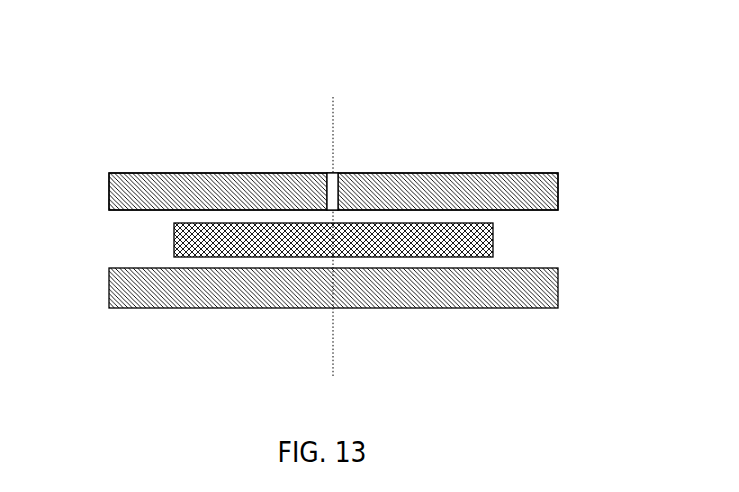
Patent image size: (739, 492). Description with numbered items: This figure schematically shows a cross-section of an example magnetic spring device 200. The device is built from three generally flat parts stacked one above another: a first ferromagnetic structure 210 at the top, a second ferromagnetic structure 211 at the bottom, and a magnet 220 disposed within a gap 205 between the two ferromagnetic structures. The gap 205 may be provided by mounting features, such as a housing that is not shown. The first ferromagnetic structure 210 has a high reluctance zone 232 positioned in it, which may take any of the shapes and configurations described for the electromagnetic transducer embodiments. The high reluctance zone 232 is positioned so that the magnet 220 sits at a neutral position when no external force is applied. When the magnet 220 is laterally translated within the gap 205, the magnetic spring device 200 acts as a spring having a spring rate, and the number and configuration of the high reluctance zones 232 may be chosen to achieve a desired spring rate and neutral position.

The magnetic spring device 200 is at (139, 89).
The gap 205 is at (531, 236).
The first ferromagnetic structure 210 is at (132, 180).
The second ferromagnetic structure 211 is at (353, 307).
The magnet 220 is at (173, 248).
The high reluctance zone 232 is at (332, 172).